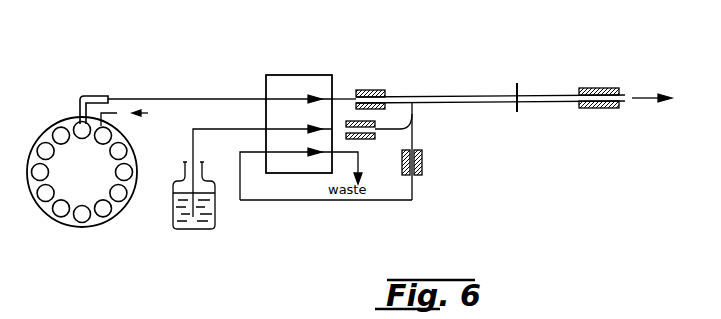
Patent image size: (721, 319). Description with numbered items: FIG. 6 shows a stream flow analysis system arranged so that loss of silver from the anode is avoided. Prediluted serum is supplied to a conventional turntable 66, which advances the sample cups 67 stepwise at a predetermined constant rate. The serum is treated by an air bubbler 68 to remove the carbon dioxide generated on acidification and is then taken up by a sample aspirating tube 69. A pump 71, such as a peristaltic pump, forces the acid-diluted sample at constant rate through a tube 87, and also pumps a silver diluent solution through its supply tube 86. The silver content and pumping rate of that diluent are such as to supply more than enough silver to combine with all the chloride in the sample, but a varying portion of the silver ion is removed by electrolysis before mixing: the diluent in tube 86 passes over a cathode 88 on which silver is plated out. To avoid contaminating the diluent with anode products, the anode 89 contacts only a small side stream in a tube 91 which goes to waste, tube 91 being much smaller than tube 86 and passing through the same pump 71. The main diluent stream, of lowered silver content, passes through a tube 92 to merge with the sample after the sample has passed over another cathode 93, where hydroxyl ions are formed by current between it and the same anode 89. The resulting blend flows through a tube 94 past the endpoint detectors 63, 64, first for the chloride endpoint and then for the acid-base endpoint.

The endpoint detector 63 is at (517, 83).
The endpoint detector 64 is at (606, 88).
The turntable 66 is at (128, 192).
The sample cups 67 is at (85, 139).
The air bubbler 68 is at (118, 112).
The sample aspirating tube 69 is at (85, 96).
The pump 71 is at (302, 56).
The supply tube 86 is at (224, 130).
The tube 87 is at (235, 98).
The cathode 88 is at (350, 121).
The anode 89 is at (422, 169).
The tube 91 is at (412, 201).
The tube 92 is at (413, 114).
The cathode 93 is at (359, 90).
The tube 94 is at (471, 70).